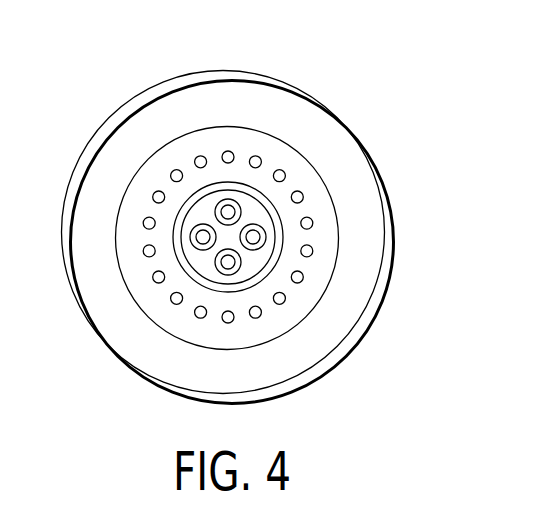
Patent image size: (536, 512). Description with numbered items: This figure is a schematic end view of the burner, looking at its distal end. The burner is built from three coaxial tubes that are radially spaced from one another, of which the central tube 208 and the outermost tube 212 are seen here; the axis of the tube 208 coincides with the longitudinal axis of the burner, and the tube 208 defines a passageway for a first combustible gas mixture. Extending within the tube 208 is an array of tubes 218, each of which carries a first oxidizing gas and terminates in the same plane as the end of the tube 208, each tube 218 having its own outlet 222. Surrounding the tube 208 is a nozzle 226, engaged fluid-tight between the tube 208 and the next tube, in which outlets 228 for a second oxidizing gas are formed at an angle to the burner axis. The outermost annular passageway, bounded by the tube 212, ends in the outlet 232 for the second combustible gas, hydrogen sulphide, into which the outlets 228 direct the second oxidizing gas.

The tube 212 is at (323, 110).
The outlet 232 is at (192, 103).
The nozzle 226 is at (190, 325).
The outlets 228 is at (310, 215).
The tube 208 is at (183, 272).
The tubes 218 is at (215, 210).
The outlet 222 is at (253, 237).